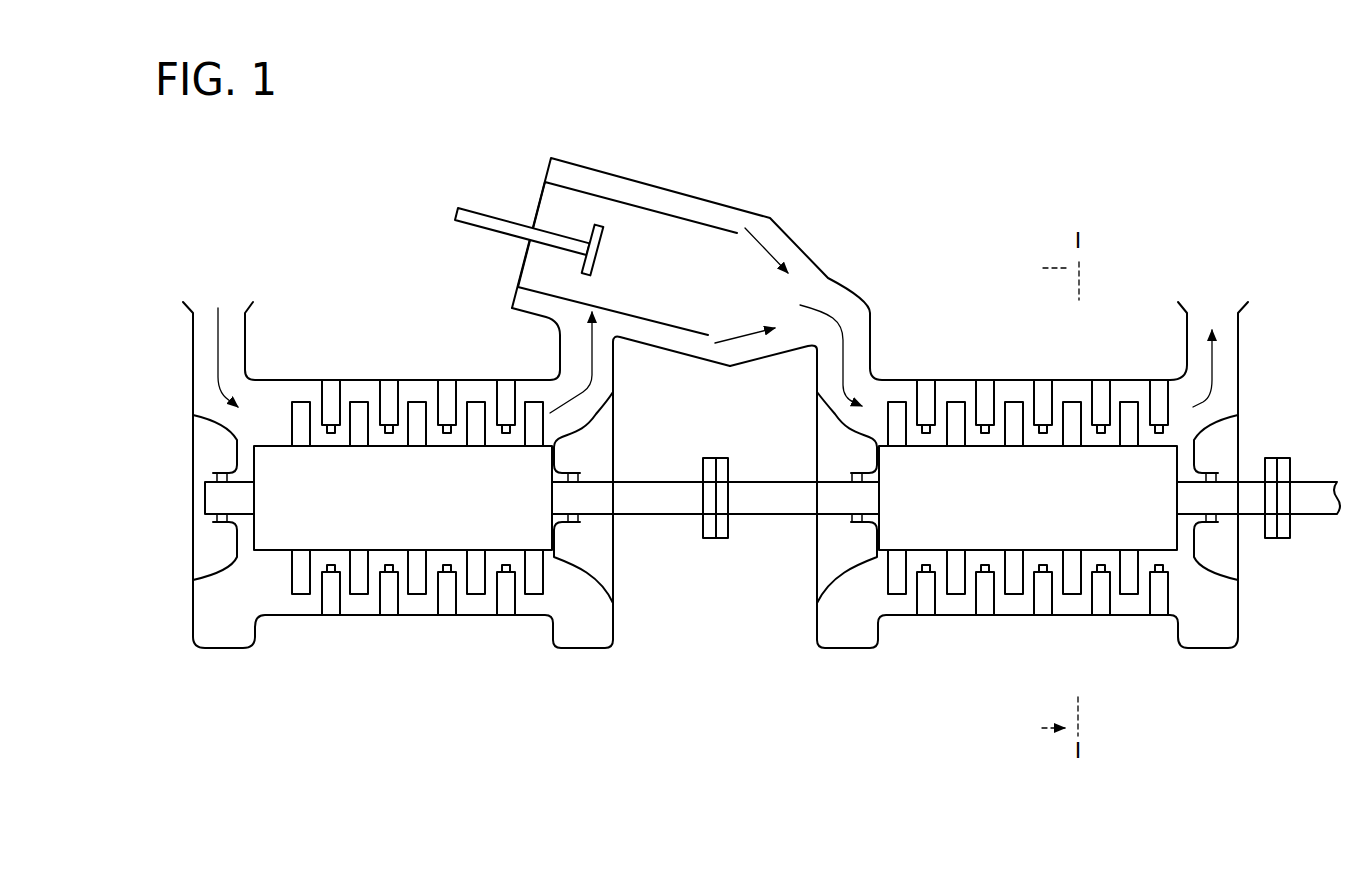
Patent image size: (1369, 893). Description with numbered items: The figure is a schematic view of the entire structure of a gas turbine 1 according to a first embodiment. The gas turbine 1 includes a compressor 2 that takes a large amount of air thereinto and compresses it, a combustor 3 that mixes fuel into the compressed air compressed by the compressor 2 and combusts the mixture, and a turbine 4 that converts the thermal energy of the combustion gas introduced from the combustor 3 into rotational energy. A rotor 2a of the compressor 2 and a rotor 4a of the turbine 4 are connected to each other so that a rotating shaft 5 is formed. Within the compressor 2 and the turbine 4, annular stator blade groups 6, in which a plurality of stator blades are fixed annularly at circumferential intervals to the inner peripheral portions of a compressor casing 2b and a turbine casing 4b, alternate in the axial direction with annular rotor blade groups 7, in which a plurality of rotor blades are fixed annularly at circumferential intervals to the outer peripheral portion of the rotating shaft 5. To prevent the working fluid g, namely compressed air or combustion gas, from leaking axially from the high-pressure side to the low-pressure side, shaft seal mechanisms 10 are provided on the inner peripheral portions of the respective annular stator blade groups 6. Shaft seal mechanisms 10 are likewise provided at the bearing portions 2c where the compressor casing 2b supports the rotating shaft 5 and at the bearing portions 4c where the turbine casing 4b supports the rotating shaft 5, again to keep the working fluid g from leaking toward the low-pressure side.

The gas turbine 1 is at (1163, 202).
The compressor 2 is at (615, 672).
The rotor of the compressor 2a is at (554, 566).
The compressor casing 2b is at (238, 623).
The bearing portions 2c is at (220, 430).
The combustor 3 is at (532, 128).
The turbine 4 is at (1238, 672).
The rotor of the turbine 4a is at (877, 566).
The turbine casing 4b is at (1197, 623).
The bearing portions 4c is at (1217, 432).
The rotating shaft 5 is at (748, 516).
The annular stator blade groups 6 is at (368, 378).
The annular rotor blade groups 7 is at (338, 357).
The shaft seal mechanisms 10 is at (331, 434).
The working fluid g is at (218, 352).